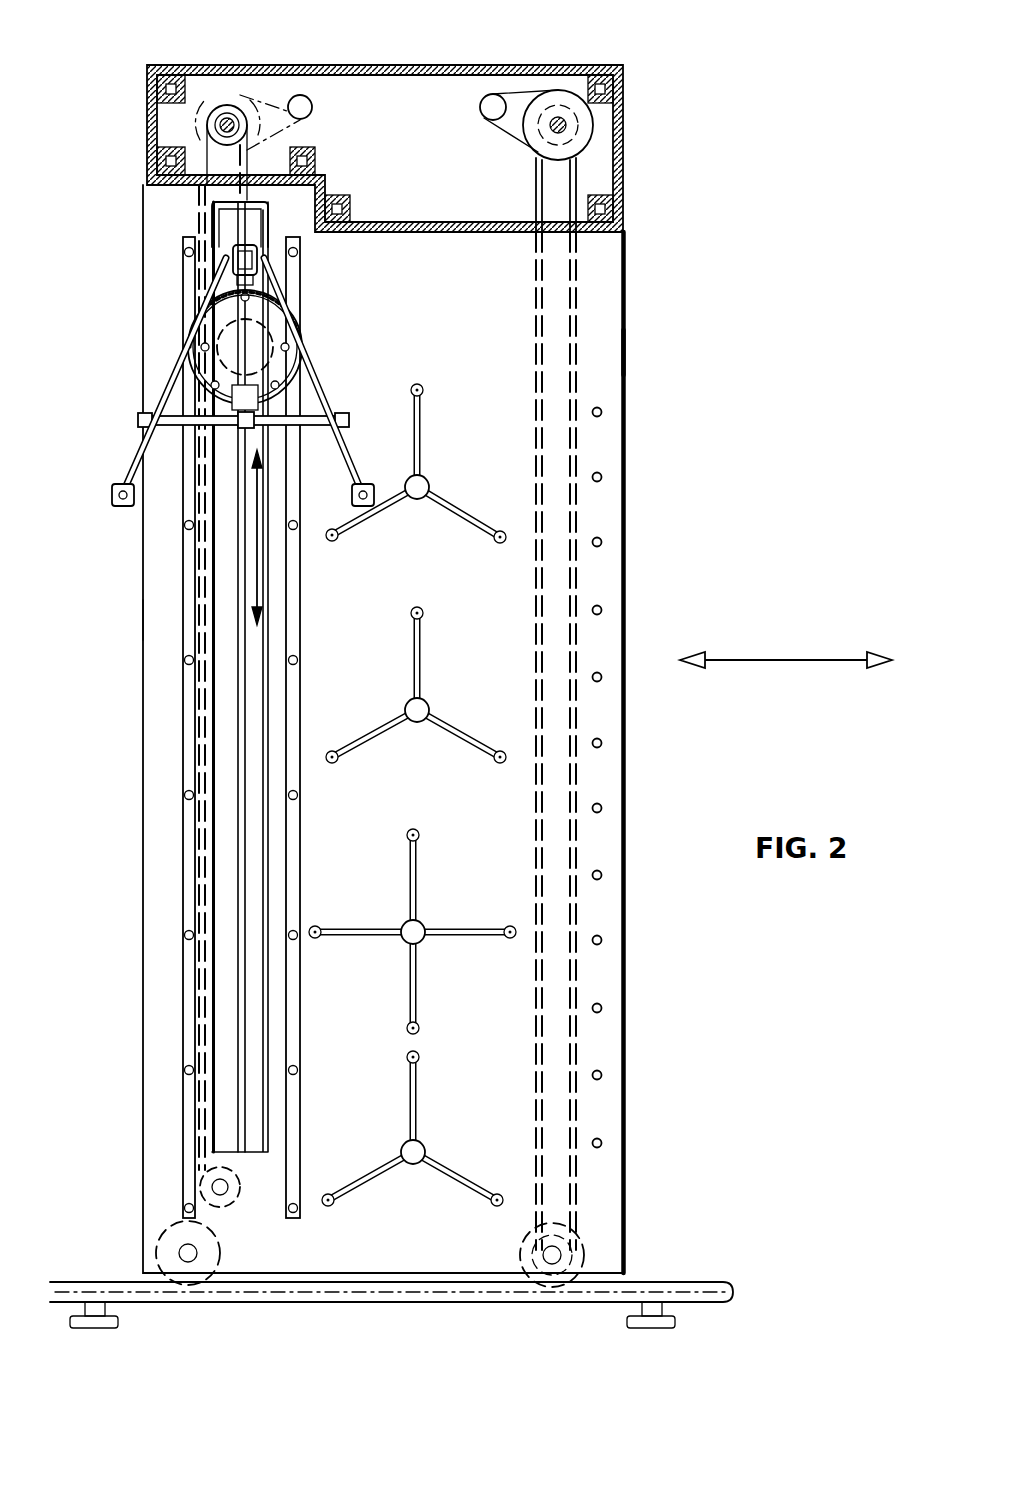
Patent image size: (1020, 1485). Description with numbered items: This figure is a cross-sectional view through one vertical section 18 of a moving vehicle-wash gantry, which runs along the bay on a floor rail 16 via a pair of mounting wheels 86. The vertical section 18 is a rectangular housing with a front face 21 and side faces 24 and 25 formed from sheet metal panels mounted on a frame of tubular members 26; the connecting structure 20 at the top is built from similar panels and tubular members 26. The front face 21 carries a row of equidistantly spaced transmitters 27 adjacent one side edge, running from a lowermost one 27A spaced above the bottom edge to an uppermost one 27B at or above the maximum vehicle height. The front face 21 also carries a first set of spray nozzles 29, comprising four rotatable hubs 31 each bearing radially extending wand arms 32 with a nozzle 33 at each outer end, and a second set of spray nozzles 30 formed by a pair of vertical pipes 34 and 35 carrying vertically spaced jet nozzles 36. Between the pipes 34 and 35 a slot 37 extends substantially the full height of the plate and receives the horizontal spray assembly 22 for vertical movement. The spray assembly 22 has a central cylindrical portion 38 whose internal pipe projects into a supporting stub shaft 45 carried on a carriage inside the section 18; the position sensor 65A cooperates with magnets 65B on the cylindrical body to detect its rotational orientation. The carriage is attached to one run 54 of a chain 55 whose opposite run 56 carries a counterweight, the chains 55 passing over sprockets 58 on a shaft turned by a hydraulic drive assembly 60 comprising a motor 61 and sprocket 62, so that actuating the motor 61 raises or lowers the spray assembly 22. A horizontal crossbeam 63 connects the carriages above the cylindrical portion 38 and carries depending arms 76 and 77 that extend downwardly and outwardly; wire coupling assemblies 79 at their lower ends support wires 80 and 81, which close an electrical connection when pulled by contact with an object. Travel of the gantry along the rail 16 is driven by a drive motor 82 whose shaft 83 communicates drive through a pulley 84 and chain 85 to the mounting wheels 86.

The rail 16 is at (422, 1271).
The vertical section 18 is at (451, 729).
The connecting structure 20 is at (385, 127).
The front face 21 is at (654, 351).
The spray assembly 22 is at (366, 311).
The side face 24 is at (758, 625).
The side face 25 is at (91, 617).
The tubular member 26 is at (428, 148).
The transmitter 27 is at (651, 776).
The lowermost transmitter 27A is at (667, 1138).
The uppermost transmitter 27B is at (664, 408).
The first set of spray nozzles 29 is at (422, 455).
The second set of spray nozzles 30 is at (407, 670).
The hub 31 is at (415, 834).
The wand arm 32 is at (384, 627).
The nozzle 33 is at (282, 611).
The vertical pipe 34 is at (128, 727).
The vertical pipe 35 is at (410, 915).
The jet nozzle 36 is at (219, 727).
The slot 37 is at (160, 1094).
The central cylindrical portion 38 is at (303, 350).
The stub shaft 45 is at (167, 347).
The run of chain 54 is at (290, 677).
The chain 55 is at (191, 152).
The run of chain 56 is at (138, 647).
The sprocket 58 is at (163, 146).
The hydraulic drive assembly 60 is at (259, 79).
The motor 61 is at (338, 108).
The sprocket 62 is at (217, 87).
The horizontal crossbeam 63 is at (174, 225).
The position sensor 65A is at (312, 267).
The magnet 65B is at (157, 296).
The depending arm 76 is at (98, 433).
The depending arm 77 is at (318, 408).
The wire coupling assembly 79 is at (132, 376).
The wire 80 is at (86, 508).
The wire 81 is at (339, 488).
The drive motor 82 is at (460, 99).
The shaft 83 is at (504, 129).
The pulley 84 is at (608, 125).
The chain 85 is at (587, 704).
The mounting wheel 86 is at (372, 1245).